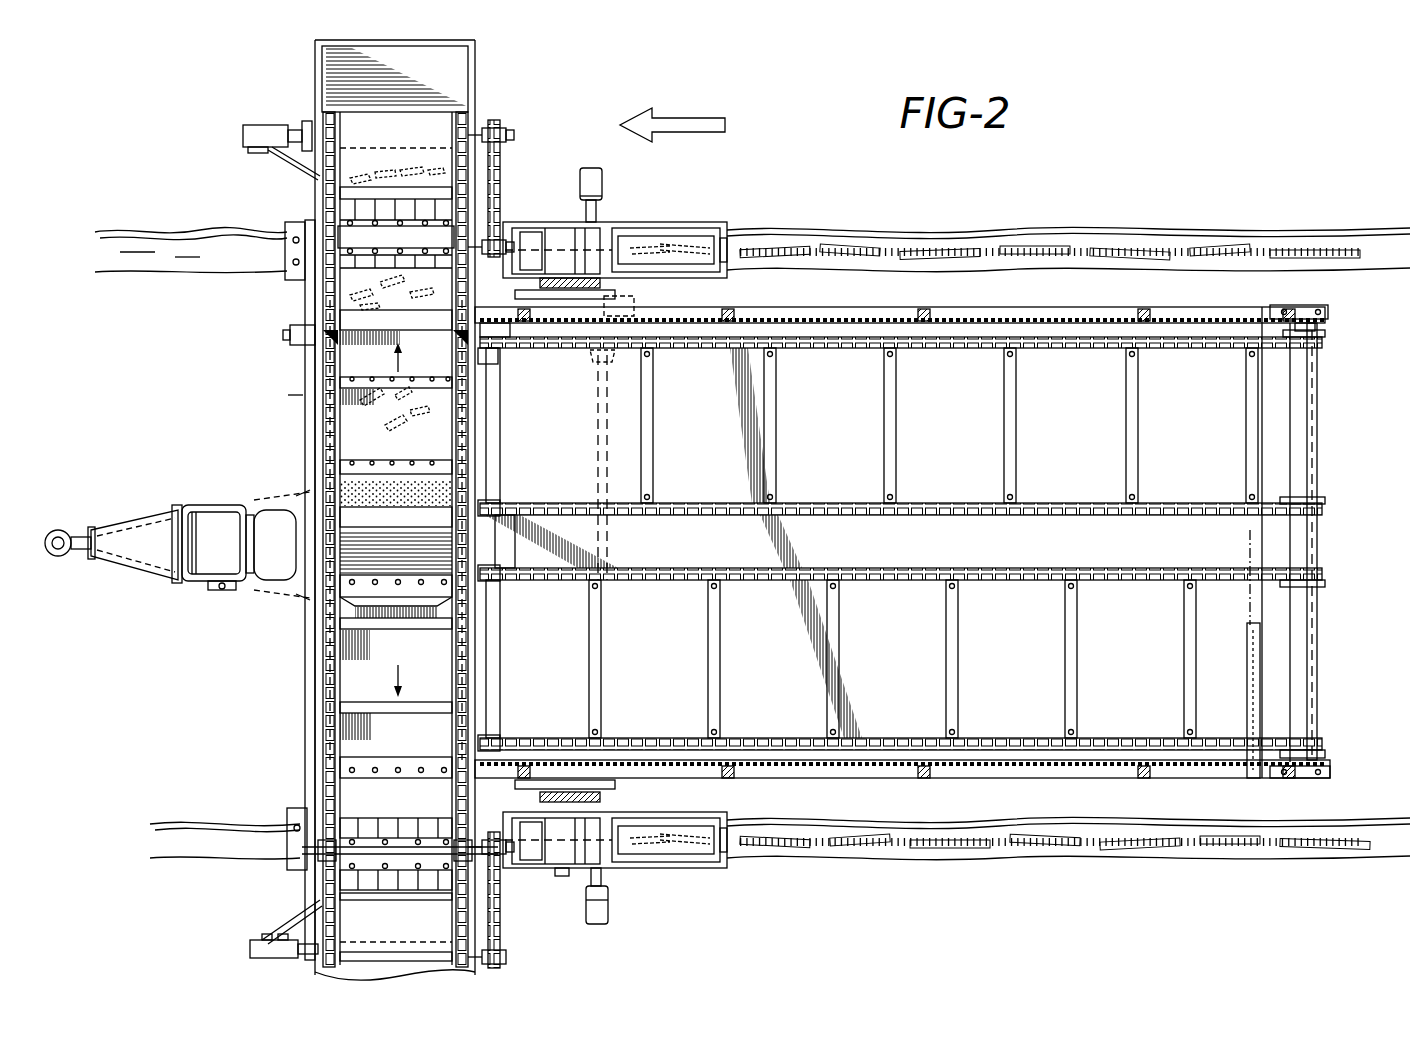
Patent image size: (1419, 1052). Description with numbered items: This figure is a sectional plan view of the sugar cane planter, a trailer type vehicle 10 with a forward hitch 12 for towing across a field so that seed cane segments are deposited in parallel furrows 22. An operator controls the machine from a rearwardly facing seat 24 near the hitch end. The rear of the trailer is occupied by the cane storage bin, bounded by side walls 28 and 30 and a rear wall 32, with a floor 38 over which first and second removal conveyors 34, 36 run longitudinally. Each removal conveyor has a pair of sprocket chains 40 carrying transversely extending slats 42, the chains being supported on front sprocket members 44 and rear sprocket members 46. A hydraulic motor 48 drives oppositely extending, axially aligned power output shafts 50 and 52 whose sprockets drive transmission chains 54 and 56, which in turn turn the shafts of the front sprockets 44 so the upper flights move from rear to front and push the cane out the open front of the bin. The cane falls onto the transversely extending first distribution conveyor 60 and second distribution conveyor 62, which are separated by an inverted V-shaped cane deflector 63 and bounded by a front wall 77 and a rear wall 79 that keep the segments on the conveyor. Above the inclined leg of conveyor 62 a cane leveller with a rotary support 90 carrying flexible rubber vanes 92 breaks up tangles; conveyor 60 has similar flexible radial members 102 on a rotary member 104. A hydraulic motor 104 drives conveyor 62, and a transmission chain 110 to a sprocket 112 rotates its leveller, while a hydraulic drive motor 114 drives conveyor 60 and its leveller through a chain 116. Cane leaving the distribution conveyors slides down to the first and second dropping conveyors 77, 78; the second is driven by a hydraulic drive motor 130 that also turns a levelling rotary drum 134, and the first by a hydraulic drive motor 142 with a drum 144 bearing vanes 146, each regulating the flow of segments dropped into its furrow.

The trailer type vehicle 10 is at (262, 430).
The forward hitch 12 is at (62, 558).
The parallel furrows 22 is at (213, 272).
The rearwardly facing seat 24 is at (204, 561).
The side wall 28 is at (1088, 318).
The side wall 30 is at (1012, 742).
The rear wall 32 is at (1246, 672).
The first removal conveyor 34 is at (1332, 612).
The second removal conveyor 36 is at (1335, 405).
The floor 38 is at (723, 543).
The sprocket chains 40 is at (672, 342).
The transversely extending slats 42 is at (654, 424).
The front sprocket members 44 is at (500, 352).
The rear sprocket members 46 is at (1325, 345).
The hydraulic motor 48 is at (618, 360).
The power output shaft 50 is at (596, 446).
The power output shaft 52 is at (612, 318).
The transmission chain 54 is at (530, 790).
The transmission chain 56 is at (540, 362).
The first distribution conveyor 60 is at (296, 671).
The second distribution conveyor 62 is at (298, 357).
The inverted V-shaped cane deflector 63 is at (396, 562).
The first dropping conveyor 77 is at (322, 468).
The second dropping conveyor 78 is at (680, 208).
The rear wall 79 is at (476, 108).
The rotary support 90 is at (396, 240).
The flexible rubber flaps or vanes 92 is at (372, 205).
The flexible radial members 102 is at (374, 828).
The rotary member 104 is at (262, 118).
The transmission chain 110 is at (500, 168).
The sprocket 112 is at (502, 126).
The hydraulic drive motor 114 is at (257, 938).
The chain 116 is at (512, 906).
The hydraulic drive motor 130 is at (600, 175).
The rotary drum 134 is at (536, 226).
The hydraulic drive motor 142 is at (610, 912).
The drum 144 is at (561, 876).
The vanes 146 is at (598, 822).